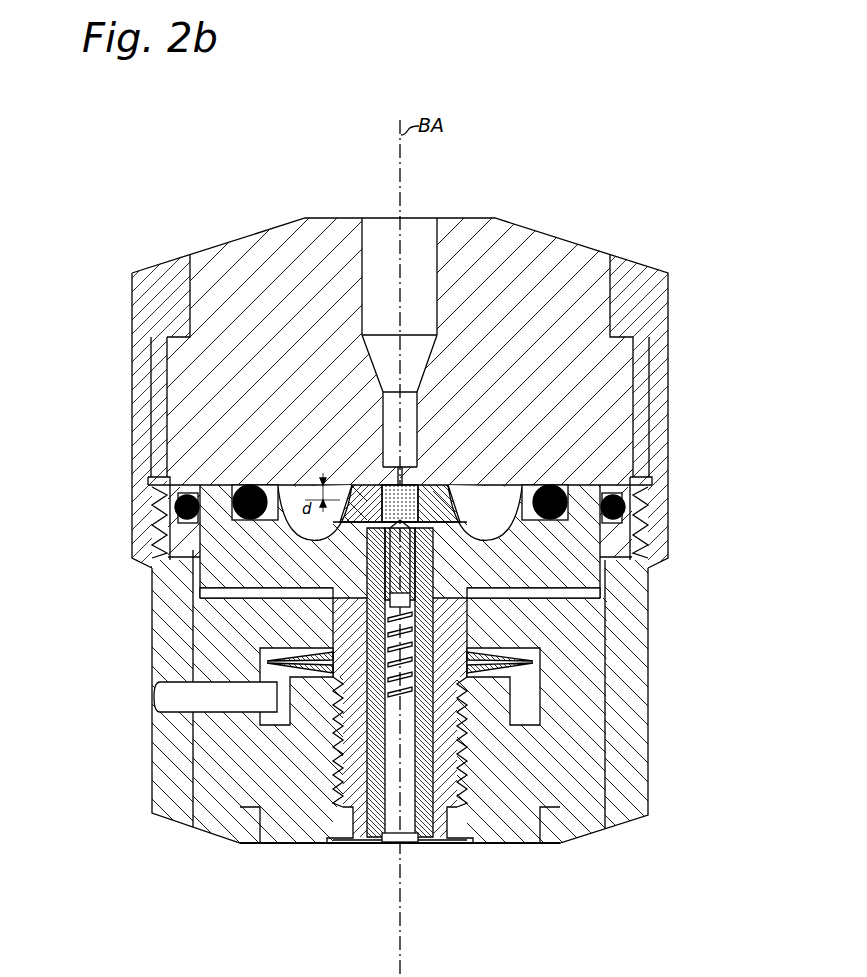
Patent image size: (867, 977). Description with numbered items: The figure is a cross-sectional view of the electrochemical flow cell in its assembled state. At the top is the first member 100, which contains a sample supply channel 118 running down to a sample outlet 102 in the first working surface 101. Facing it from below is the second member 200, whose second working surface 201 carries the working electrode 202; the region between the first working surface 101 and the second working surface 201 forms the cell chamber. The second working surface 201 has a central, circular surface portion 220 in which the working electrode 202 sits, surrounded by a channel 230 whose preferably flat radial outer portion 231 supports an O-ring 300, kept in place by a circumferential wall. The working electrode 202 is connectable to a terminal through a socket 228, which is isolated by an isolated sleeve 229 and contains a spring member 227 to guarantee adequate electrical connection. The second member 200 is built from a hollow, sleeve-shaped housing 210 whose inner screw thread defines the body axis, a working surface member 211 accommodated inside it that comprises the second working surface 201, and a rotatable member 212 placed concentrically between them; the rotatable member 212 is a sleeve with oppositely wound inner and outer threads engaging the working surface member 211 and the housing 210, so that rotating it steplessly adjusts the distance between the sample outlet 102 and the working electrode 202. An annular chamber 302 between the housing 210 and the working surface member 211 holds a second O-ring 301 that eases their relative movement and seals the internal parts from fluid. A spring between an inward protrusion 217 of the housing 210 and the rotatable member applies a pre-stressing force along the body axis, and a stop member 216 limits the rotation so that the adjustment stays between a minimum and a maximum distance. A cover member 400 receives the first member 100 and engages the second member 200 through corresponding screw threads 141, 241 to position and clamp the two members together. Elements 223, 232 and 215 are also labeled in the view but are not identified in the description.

The first member 100 is at (245, 280).
The sample supply channel 118 is at (417, 250).
The central circular surface portion 220 is at (360, 485).
The tapered bore section 223 is at (345, 485).
The cover member 400 is at (645, 283).
The sample outlet 102 is at (435, 470).
The working electrode 202 is at (467, 485).
The first working surface 101 is at (500, 485).
The second working surface 201 is at (518, 486).
The channel 230 is at (295, 487).
The O-ring 300 is at (228, 485).
The sleeve plug 232 is at (210, 487).
The second O-ring 301 is at (150, 497).
The annular chamber 302 is at (148, 505).
The radial outer portion 231 is at (180, 540).
The screw thread 141 is at (469, 522).
The screw thread 241 is at (640, 530).
The working surface member 211 is at (550, 570).
The spring member 227 is at (525, 645).
The housing 210 is at (620, 688).
The cavity 215 is at (522, 670).
The inward protrusion 217 is at (307, 612).
The stop member 216 is at (222, 705).
The isolated sleeve 229 is at (347, 812).
The socket 228 is at (393, 820).
The second member 200 is at (452, 850).
The rotatable member 212 is at (512, 820).